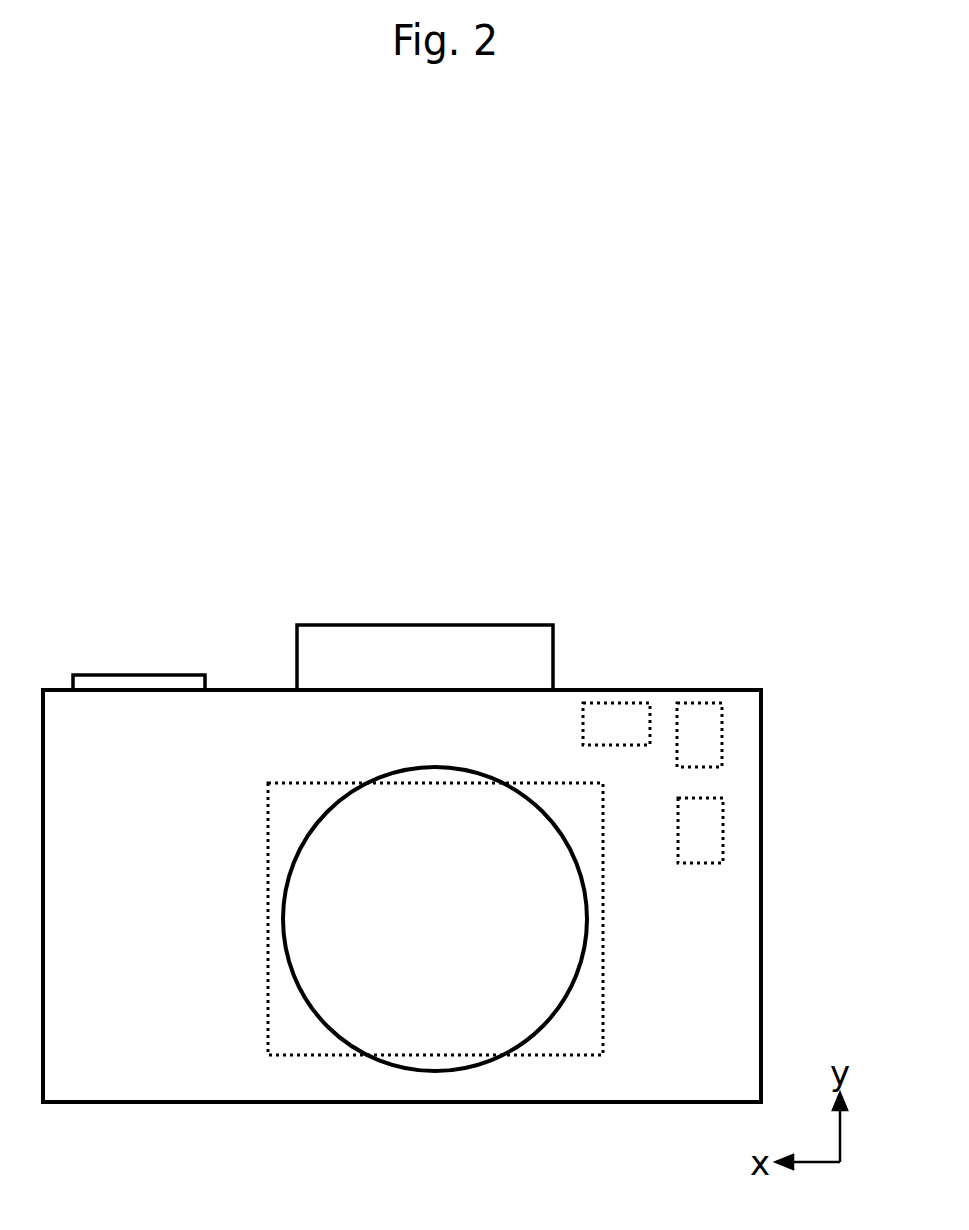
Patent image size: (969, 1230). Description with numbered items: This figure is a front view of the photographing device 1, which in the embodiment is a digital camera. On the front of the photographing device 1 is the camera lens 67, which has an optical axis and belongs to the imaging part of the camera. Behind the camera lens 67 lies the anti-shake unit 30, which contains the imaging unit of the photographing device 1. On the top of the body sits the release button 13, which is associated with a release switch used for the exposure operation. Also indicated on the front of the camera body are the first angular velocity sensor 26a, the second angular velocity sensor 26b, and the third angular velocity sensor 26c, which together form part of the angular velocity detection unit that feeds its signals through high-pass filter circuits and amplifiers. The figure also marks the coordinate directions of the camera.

The photographing device 1 is at (760, 686).
The release button 13 is at (120, 675).
The first angular velocity sensor 26a is at (710, 702).
The second angular velocity sensor 26b is at (617, 702).
The third angular velocity sensor 26c is at (723, 830).
The anti-shake unit 30 is at (270, 940).
The camera lens 67 is at (303, 850).